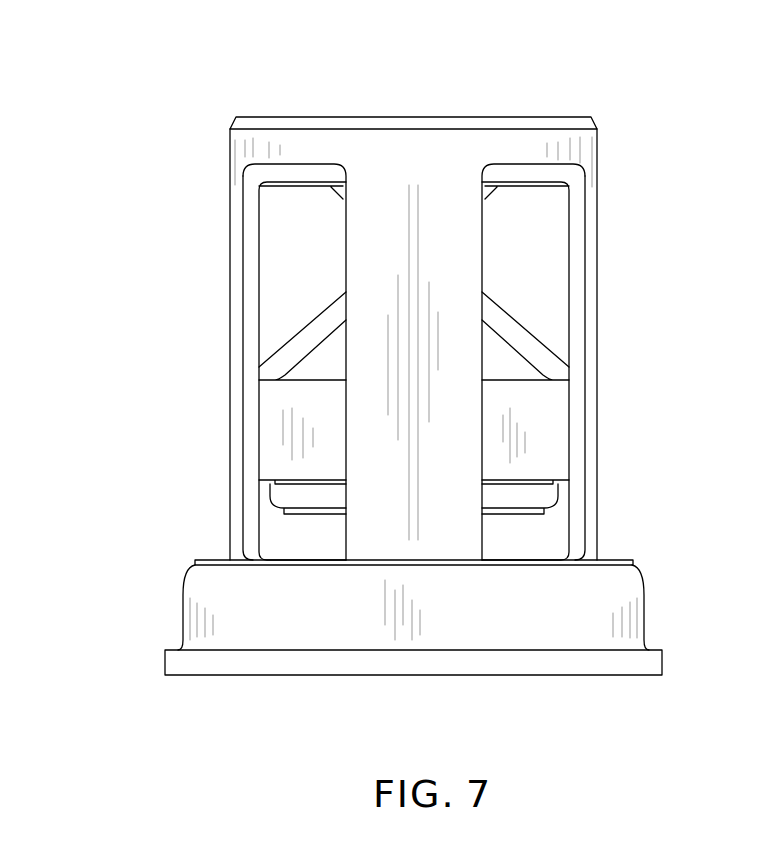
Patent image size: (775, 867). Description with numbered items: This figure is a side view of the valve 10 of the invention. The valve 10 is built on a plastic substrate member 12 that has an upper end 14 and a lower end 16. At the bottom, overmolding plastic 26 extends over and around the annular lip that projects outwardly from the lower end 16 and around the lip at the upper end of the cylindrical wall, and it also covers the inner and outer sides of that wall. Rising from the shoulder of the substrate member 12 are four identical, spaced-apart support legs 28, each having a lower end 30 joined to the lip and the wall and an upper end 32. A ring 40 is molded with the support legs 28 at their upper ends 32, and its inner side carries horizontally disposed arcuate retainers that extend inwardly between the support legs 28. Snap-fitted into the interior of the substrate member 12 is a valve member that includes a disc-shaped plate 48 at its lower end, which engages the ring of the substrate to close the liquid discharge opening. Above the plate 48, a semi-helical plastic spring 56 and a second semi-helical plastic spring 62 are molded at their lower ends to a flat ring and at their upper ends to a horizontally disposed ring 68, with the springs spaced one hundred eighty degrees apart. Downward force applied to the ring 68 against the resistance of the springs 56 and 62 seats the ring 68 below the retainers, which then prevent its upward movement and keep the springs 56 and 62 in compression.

The valve 10 is at (668, 219).
The substrate member 12 is at (474, 120).
The upper end 14 is at (604, 118).
The lower end 16 is at (548, 693).
The overmolding plastic 26 is at (617, 586).
The support legs 28 is at (466, 284).
The lower end 30 is at (450, 557).
The upper end 32 is at (387, 180).
The ring 40 is at (231, 139).
The disc-shaped plate 48 is at (533, 496).
The semi-helical plastic spring 56 is at (548, 350).
The semi-helical plastic spring 62 is at (293, 307).
The ring 68 is at (556, 175).